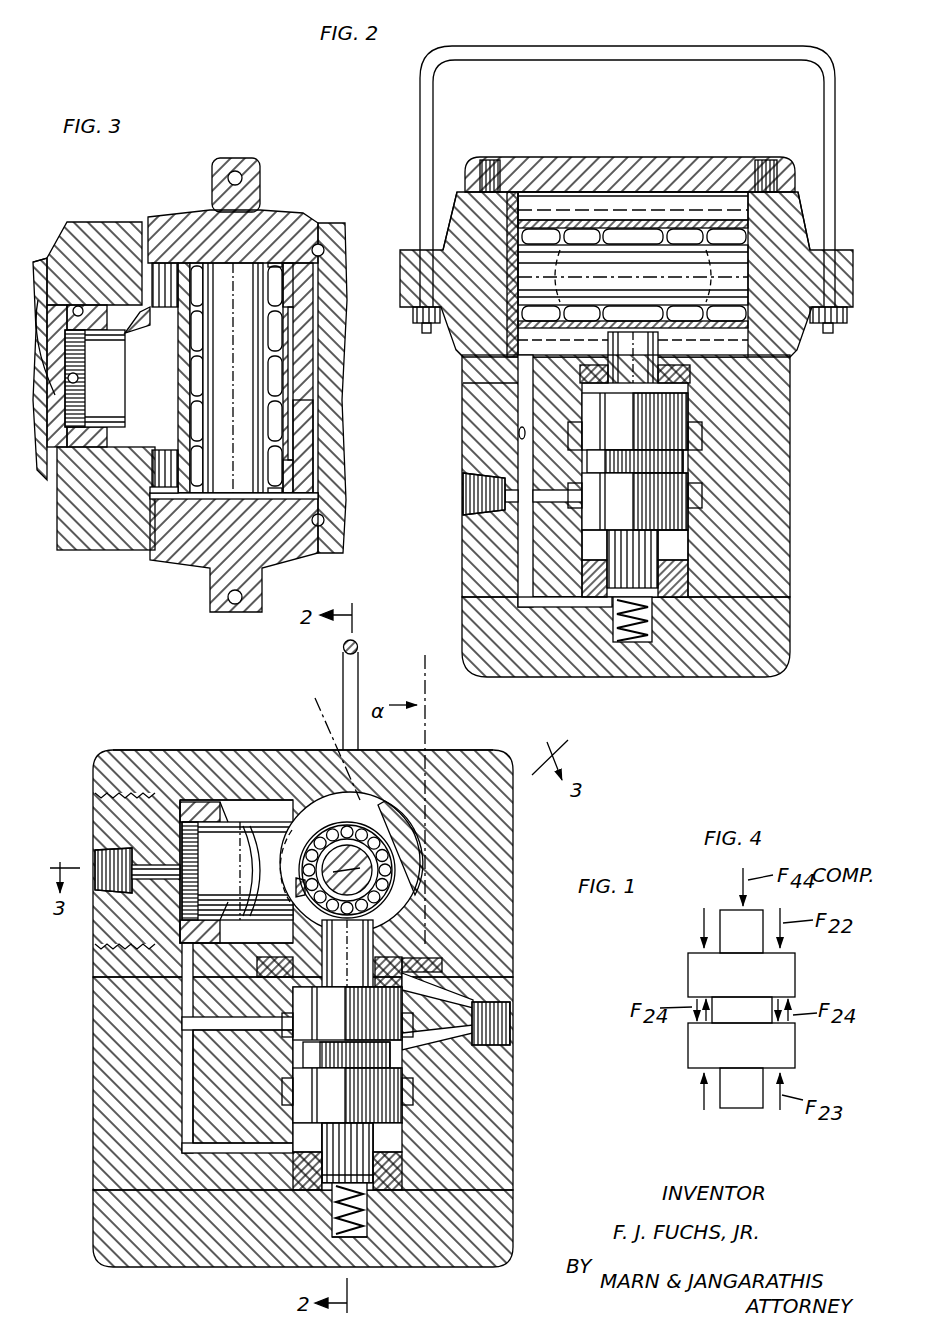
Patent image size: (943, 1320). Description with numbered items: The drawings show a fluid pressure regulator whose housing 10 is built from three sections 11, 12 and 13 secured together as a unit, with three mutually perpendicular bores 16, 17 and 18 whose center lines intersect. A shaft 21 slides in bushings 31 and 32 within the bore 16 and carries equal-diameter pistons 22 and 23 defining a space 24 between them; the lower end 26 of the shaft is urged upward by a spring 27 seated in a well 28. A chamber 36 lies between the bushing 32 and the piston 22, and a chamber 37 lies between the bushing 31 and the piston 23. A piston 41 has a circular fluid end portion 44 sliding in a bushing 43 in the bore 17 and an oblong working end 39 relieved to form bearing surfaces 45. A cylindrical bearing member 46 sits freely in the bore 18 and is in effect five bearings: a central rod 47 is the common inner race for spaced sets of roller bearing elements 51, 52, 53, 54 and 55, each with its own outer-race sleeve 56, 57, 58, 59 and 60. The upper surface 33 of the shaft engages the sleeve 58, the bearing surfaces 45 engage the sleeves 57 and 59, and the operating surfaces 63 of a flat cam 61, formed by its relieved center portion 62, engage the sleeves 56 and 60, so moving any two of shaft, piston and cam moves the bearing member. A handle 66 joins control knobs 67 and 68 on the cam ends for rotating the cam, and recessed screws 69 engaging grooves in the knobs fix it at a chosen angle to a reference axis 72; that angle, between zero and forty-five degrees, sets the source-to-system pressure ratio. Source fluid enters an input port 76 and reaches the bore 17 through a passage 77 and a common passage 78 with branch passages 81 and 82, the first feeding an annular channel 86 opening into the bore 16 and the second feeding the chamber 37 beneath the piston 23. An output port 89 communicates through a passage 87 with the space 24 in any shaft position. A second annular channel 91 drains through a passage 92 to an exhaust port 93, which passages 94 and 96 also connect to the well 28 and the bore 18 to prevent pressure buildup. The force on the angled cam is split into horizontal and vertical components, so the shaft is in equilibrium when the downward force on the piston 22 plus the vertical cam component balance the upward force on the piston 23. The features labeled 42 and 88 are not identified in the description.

In FIG. 3, the housing 10 is at (65, 214).
In FIG. 2, the housing 10 is at (746, 682).
In FIG. 1, the housing 10 is at (107, 748).
In FIG. 1, the housing section 11 is at (512, 832).
In FIG. 1, the housing section 12 is at (93, 1132).
In FIG. 1, the housing section 13 is at (93, 1232).
In FIG. 2, the bore 16 is at (592, 547).
In FIG. 1, the bore 16 is at (393, 1145).
In FIG. 3, the bore 17 is at (52, 278).
In FIG. 1, the bore 17 is at (193, 813).
In FIG. 3, the bore 18 is at (155, 470).
In FIG. 2, the bore 18 is at (568, 202).
In FIG. 1, the bore 18 is at (407, 820).
In FIG. 1, the shaft 21 is at (413, 1115).
In FIG. 4, the shaft 21 is at (743, 1108).
In FIG. 2, the piston 22 is at (622, 441).
In FIG. 1, the piston 22 is at (339, 1029).
In FIG. 4, the piston 22 is at (688, 975).
In FIG. 2, the piston 23 is at (622, 513).
In FIG. 1, the piston 23 is at (339, 1112).
In FIG. 4, the piston 23 is at (688, 1045).
In FIG. 2, the space 24 is at (686, 457).
In FIG. 1, the space 24 is at (397, 1057).
In FIG. 1, the lower end of shaft 26 is at (335, 1167).
In FIG. 1, the spring 27 is at (360, 1238).
In FIG. 2, the well 28 is at (620, 642).
In FIG. 1, the well 28 is at (363, 1227).
In FIG. 1, the bushing 31 is at (317, 1185).
In FIG. 1, the bushing 32 is at (440, 960).
In FIG. 2, the upper surface of shaft 33 is at (663, 330).
In FIG. 1, the upper surface of shaft 33 is at (380, 920).
In FIG. 2, the chamber 36 is at (603, 363).
In FIG. 1, the chamber 36 is at (303, 980).
In FIG. 2, the chamber 37 is at (677, 548).
In FIG. 1, the chamber 37 is at (307, 1140).
In FIG. 2, the working end of piston 39 is at (700, 270).
In FIG. 1, the working end of piston 39 is at (307, 800).
In FIG. 3, the piston 41 is at (140, 302).
In FIG. 1, the piston 41 is at (243, 818).
In FIG. 3, the flange 42 is at (178, 380).
In FIG. 3, the bushing 43 is at (78, 445).
In FIG. 1, the bushing 43 is at (180, 810).
In FIG. 3, the fluid end portion 44 is at (92, 362).
In FIG. 1, the fluid end portion 44 is at (190, 867).
In FIG. 3, the bearing surfaces 45 is at (180, 323).
In FIG. 1, the bearing surfaces 45 is at (300, 888).
In FIG. 3, the cylindrical bearing member 46 is at (217, 502).
In FIG. 2, the cylindrical bearing member 46 is at (753, 297).
In FIG. 1, the cylindrical bearing member 46 is at (327, 812).
In FIG. 3, the central rod 47 is at (213, 258).
In FIG. 2, the central rod 47 is at (630, 174).
In FIG. 3, the roller bearing elements 51 is at (277, 284).
In FIG. 3, the roller bearing elements 52 is at (277, 328).
In FIG. 3, the roller bearing elements 53 is at (270, 377).
In FIG. 2, the roller bearing elements 53 is at (630, 232).
In FIG. 3, the roller bearing elements 54 is at (270, 432).
In FIG. 3, the roller bearing elements 55 is at (270, 468).
In FIG. 3, the cylindrical sleeve 56 is at (288, 300).
In FIG. 3, the cylindrical sleeve 57 is at (283, 347).
In FIG. 3, the cylindrical sleeve 58 is at (283, 393).
In FIG. 2, the cylindrical sleeve 58 is at (610, 226).
In FIG. 3, the cylindrical sleeve 59 is at (290, 450).
In FIG. 3, the cylindrical sleeve 60 is at (280, 470).
In FIG. 3, the camming element 61 is at (307, 437).
In FIG. 1, the camming element 61 is at (430, 878).
In FIG. 3, the relieved center portion 62 is at (310, 370).
In FIG. 3, the operating surfaces 63 is at (300, 235).
In FIG. 3, the handle 66 is at (233, 171).
In FIG. 2, the handle 66 is at (517, 64).
In FIG. 1, the handle 66 is at (358, 661).
In FIG. 3, the control knob 67 is at (262, 172).
In FIG. 2, the control knob 67 is at (800, 197).
In FIG. 3, the control knob 68 is at (163, 563).
In FIG. 2, the control knob 68 is at (458, 347).
In FIG. 2, the recessed screws 69 is at (488, 158).
In FIG. 1, the reference axis 72 is at (425, 690).
In FIG. 1, the source port 76 is at (102, 853).
In FIG. 3, the passage 77 is at (36, 337).
In FIG. 1, the passage 77 is at (162, 873).
In FIG. 1, the common passage 78 is at (183, 1097).
In FIG. 1, the branch passage 81 is at (240, 1028).
In FIG. 1, the branch passage 82 is at (203, 1153).
In FIG. 2, the first annular channel 86 is at (702, 427).
In FIG. 1, the first annular channel 86 is at (287, 1040).
In FIG. 1, the passage 87 is at (460, 1040).
In FIG. 1, the passage 88 is at (443, 967).
In FIG. 1, the system port 89 is at (503, 1035).
In FIG. 2, the second annular channel 91 is at (702, 497).
In FIG. 1, the second annular channel 91 is at (412, 1083).
In FIG. 2, the passage 92 is at (515, 527).
In FIG. 2, the exhaust port 93 is at (468, 512).
In FIG. 2, the passage 94 is at (557, 603).
In FIG. 2, the passage 96 is at (519, 433).